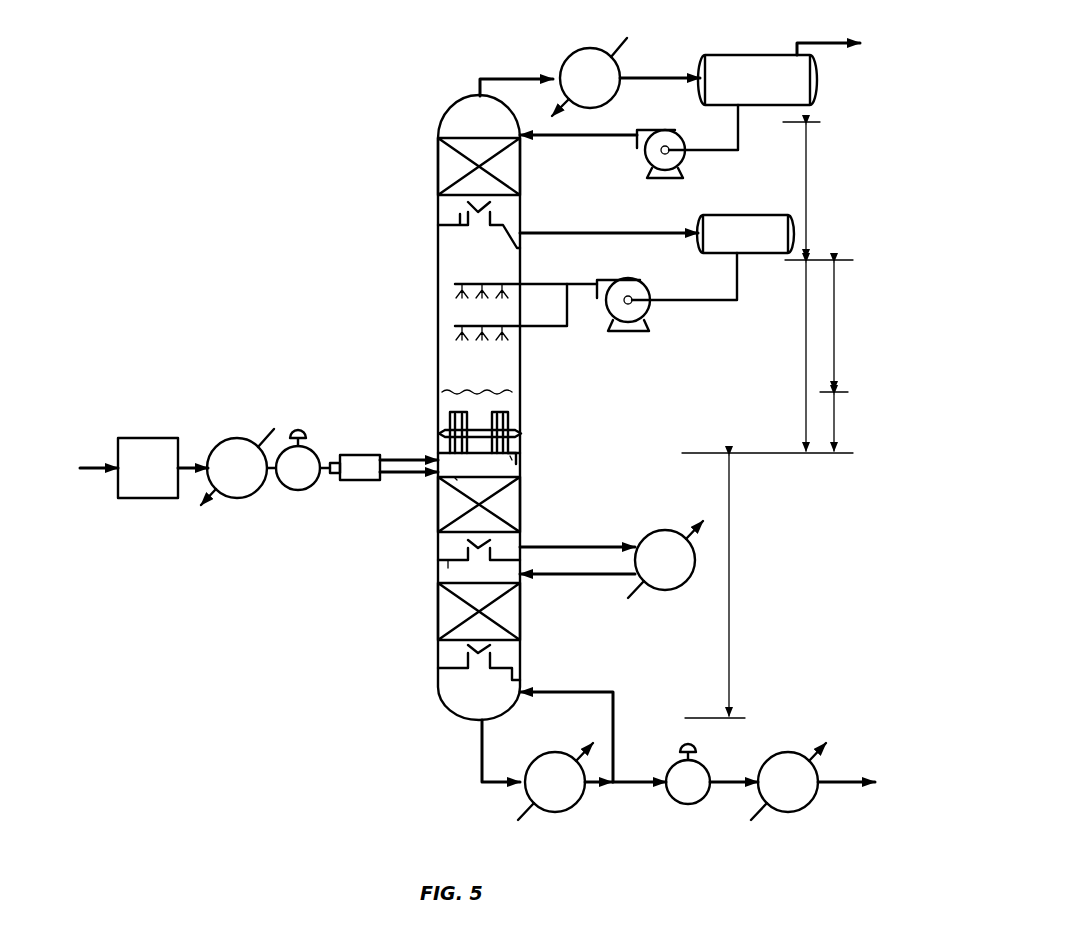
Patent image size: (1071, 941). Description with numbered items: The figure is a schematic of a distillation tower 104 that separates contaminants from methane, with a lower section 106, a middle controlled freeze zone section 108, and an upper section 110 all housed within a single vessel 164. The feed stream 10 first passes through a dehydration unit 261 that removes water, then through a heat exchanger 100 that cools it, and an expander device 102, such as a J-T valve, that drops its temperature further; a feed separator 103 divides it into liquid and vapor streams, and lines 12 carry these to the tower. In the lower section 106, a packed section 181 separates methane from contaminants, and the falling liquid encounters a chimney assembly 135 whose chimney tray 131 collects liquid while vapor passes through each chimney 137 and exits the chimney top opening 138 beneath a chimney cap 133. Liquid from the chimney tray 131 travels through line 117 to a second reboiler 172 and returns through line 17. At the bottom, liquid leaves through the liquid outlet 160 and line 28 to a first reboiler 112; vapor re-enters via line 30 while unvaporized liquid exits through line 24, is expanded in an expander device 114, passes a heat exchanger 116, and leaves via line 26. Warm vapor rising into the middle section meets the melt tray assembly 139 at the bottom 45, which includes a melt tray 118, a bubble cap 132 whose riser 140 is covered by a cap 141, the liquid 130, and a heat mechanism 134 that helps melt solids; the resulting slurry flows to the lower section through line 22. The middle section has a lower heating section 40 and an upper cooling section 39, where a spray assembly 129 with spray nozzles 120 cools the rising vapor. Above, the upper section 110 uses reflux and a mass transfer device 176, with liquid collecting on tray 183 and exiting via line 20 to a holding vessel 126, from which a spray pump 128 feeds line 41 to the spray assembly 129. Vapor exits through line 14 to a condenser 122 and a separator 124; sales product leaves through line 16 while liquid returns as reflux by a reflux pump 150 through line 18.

The distillation tower 104 is at (343, 108).
The mass transfer device 176 is at (461, 137).
The tray 183 is at (458, 222).
The spray nozzle 120 is at (455, 330).
The cap 141 is at (460, 394).
The liquid 130 is at (513, 430).
The heat mechanism 134 is at (450, 432).
The bubble cap 132 is at (510, 414).
The riser 140 is at (512, 452).
The melt tray 118 is at (510, 456).
The melt tray assembly 139 is at (513, 403).
The bottom of the middle controlled freeze zone section 45 is at (478, 455).
The chimney top opening 138 is at (460, 545).
The packed section 181 is at (455, 478).
The chimney 137 is at (462, 553).
The chimney cap 133 is at (492, 543).
The chimney assembly 135 is at (393, 568).
The chimney tray 131 is at (448, 563).
The single vessel 164 is at (520, 656).
The line 14 is at (513, 79).
The condenser 122 is at (588, 48).
The separator 124 is at (730, 55).
The line 16 is at (808, 43).
The reflux pump 150 is at (670, 128).
The line 18 is at (594, 140).
The line 20 is at (580, 233).
The holding vessel 126 is at (727, 215).
The spray pump 128 is at (634, 280).
The line 41 is at (684, 300).
The spray assembly 129 is at (578, 334).
The upper section 110 is at (806, 181).
The middle controlled freeze zone section 108 is at (806, 348).
The upper section of the middle controlled freeze zone section 39 is at (834, 318).
The lower section of the middle controlled freeze zone section 40 is at (834, 408).
The lower section 106 is at (729, 576).
The second reboiler 172 is at (655, 530).
The line 117 is at (596, 547).
The line 17 is at (618, 580).
The line 30 is at (574, 692).
The liquid outlet 160 is at (480, 732).
The line 28 is at (500, 786).
The first reboiler 112 is at (563, 754).
The line 24 is at (628, 780).
The expander device 114 is at (706, 805).
The heat exchanger 116 is at (798, 754).
The line 26 is at (838, 780).
The feed stream 10 is at (94, 466).
The dehydration unit 261 is at (158, 438).
The heat exchanger 100 is at (246, 438).
The expander device 102 is at (297, 490).
The feed separator 103 is at (335, 475).
The line 12 is at (362, 455).
The line 22 is at (436, 459).